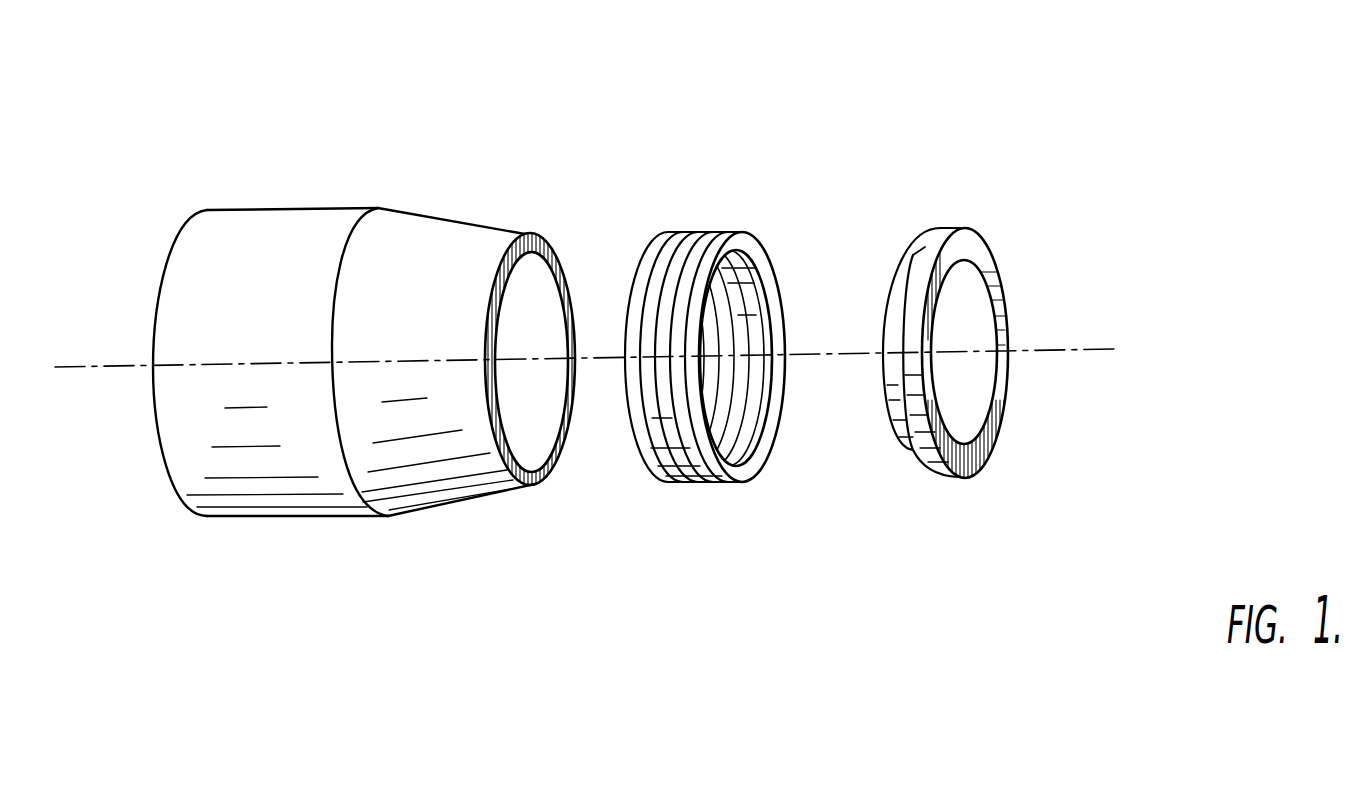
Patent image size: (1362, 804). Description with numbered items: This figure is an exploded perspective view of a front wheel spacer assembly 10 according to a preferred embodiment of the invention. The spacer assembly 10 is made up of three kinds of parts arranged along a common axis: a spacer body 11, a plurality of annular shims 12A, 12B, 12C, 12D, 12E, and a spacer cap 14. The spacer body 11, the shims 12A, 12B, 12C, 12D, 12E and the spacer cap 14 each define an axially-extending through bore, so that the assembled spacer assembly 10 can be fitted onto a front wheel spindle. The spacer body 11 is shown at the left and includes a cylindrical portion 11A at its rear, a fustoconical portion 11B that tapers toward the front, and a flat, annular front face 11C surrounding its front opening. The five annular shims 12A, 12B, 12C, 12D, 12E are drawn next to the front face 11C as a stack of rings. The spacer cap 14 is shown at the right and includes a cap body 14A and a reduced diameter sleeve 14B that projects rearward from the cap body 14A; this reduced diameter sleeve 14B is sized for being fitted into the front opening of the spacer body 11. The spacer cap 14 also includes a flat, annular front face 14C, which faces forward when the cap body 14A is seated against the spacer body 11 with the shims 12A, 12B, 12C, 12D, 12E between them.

The front wheel spacer assembly 10 is at (522, 90).
The spacer body 11 is at (367, 350).
The cylindrical portion 11A is at (267, 490).
The fustoconical portion 11B is at (415, 490).
The flat, annular front face 11C is at (535, 486).
The annular shim 12A is at (668, 231).
The annular shim 12B is at (690, 231).
The annular shim 12C is at (705, 231).
The annular shim 12D is at (717, 231).
The annular shim 12E is at (743, 231).
The spacer cap 14 is at (980, 427).
The cap body 14A is at (937, 473).
The reduced diameter sleeve 14B is at (893, 412).
The flat, annular front face 14C is at (1000, 412).